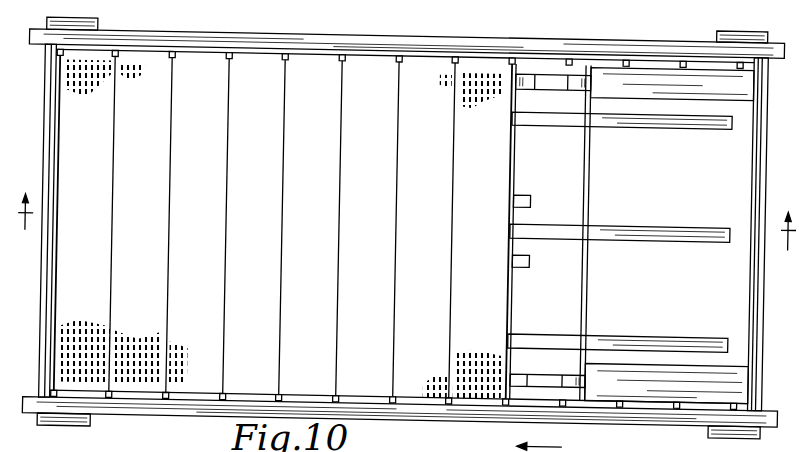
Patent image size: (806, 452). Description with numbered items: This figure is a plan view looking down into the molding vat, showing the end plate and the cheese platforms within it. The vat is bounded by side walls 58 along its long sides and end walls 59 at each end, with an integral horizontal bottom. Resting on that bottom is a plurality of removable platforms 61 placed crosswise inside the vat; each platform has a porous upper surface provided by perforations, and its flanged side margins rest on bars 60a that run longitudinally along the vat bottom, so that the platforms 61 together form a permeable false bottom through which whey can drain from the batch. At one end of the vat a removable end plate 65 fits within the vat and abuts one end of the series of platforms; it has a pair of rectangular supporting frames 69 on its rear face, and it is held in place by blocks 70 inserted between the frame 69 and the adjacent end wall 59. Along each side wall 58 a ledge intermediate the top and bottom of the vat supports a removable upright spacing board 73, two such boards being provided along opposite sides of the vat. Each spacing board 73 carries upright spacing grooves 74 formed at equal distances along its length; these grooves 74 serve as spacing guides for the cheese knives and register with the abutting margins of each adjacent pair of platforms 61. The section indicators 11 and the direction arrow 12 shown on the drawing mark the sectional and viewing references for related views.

The section line 11- 11 is at (407, 244).
The viewing direction arrow 12 is at (547, 434).
The side wall 58 is at (232, 40).
The end wall 59 is at (50, 72).
The bar 60a is at (640, 122).
The removable platform 61 is at (134, 379).
The removable end plate 65 is at (505, 296).
The rectangular supporting frame 69 is at (553, 78).
The block 70 is at (654, 80).
The spacing board 73 is at (318, 50).
The spacing groove 74 is at (329, 399).